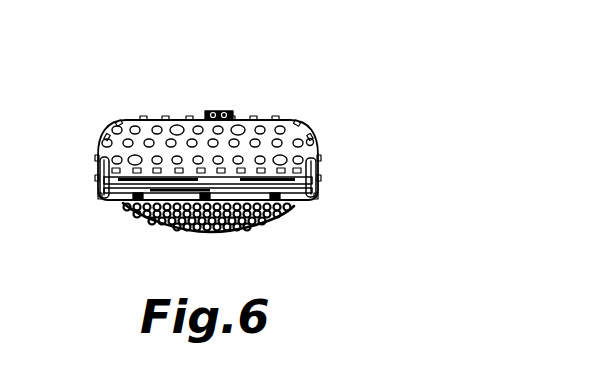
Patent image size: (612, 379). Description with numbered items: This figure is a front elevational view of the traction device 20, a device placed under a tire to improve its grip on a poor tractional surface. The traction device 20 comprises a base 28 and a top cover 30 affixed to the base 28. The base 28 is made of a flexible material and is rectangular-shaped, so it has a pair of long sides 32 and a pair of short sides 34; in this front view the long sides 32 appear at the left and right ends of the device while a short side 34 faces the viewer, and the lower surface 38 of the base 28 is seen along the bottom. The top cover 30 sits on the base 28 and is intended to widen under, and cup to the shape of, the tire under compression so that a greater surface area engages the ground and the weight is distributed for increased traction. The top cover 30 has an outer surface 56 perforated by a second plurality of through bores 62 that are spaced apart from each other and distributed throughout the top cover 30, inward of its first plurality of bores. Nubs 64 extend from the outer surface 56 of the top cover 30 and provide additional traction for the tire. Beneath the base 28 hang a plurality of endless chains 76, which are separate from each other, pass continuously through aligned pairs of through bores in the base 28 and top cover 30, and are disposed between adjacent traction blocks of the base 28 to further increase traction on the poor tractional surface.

The traction device 20 is at (166, 65).
The base 28 is at (280, 218).
The top cover 30 is at (268, 112).
The long sides 32 is at (86, 177).
The short sides 34 is at (114, 207).
The lower surface 38 is at (240, 228).
The outer surface 56 is at (147, 125).
The second plurality of through bores 62 is at (180, 110).
The nubs 64 is at (313, 141).
The endless chains 76 is at (170, 236).